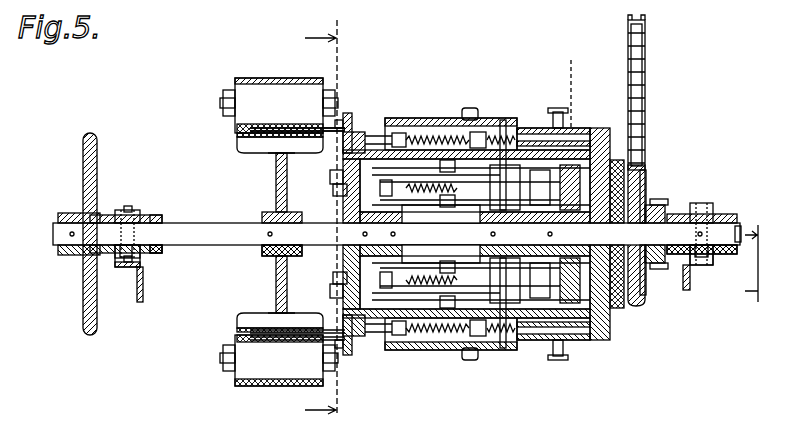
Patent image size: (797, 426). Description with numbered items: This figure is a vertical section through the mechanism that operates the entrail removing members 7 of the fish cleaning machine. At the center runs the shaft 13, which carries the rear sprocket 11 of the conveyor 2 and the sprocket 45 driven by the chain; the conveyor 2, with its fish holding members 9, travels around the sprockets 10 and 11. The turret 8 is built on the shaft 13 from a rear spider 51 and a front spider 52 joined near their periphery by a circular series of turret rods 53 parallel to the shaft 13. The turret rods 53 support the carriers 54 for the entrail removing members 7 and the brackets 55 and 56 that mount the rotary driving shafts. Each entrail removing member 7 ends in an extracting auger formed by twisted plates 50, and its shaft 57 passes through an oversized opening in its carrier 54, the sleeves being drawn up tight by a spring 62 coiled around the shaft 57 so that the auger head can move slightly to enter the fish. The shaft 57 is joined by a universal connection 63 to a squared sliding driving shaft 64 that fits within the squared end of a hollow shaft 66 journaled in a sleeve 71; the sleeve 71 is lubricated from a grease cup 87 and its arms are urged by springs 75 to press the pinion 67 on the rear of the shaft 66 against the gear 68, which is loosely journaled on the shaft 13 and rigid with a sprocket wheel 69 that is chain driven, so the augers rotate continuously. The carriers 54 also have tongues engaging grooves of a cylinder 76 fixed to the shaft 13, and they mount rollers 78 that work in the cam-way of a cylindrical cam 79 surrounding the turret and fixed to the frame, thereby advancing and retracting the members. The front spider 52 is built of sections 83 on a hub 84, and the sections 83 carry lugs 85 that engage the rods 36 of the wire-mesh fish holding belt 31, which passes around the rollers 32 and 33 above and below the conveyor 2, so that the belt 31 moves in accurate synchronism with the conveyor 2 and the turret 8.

The conveyor 2 is at (235, 146).
The entrail removing members 7 is at (370, 110).
The turret 8 is at (562, 81).
The fish receiving or holding member 9 is at (246, 150).
The sprocket 10 is at (304, 220).
The sprocket 11 is at (276, 184).
The shaft 13 is at (210, 236).
The fish holding belt 31 is at (237, 130).
The roller 32 is at (250, 78).
The roller 33 is at (240, 372).
The rods 36 is at (280, 125).
The sprocket 45 is at (85, 296).
The twisted plates 50 is at (355, 120).
The spider 51 is at (558, 343).
The spider 52 is at (378, 345).
The turret rods 53 is at (606, 302).
The carriers 54 is at (462, 118).
The bracket 55 is at (645, 155).
The bracket 56 is at (540, 128).
The shafts 57 is at (438, 118).
The springs 62 is at (430, 118).
The universal connection 63 is at (503, 120).
The sliding driving shaft 64 is at (510, 128).
The shaft 66 is at (588, 140).
The pinion 67 is at (612, 135).
The gear 68 is at (645, 146).
The sprocket wheel 69 is at (645, 155).
The sleeves 71 is at (595, 128).
The springs 75 is at (643, 183).
The cylinder 76 is at (438, 335).
The rollers 78 is at (470, 108).
The cylindrical cam 79 is at (468, 335).
The sections 83 is at (336, 190).
The hub 84 is at (343, 200).
The lugs 85 is at (333, 176).
The grease cups 87 is at (557, 108).